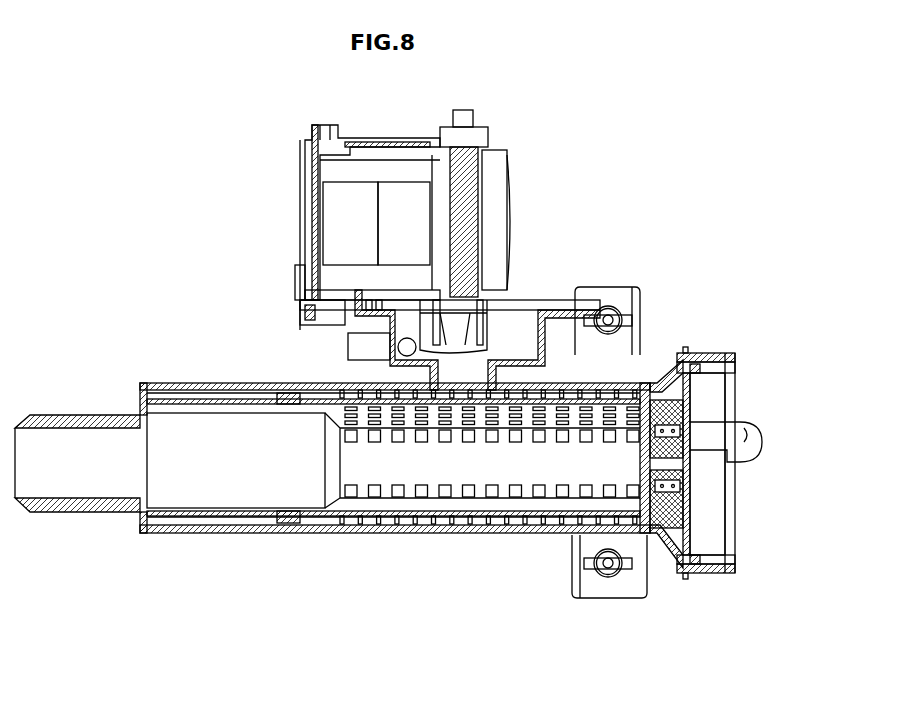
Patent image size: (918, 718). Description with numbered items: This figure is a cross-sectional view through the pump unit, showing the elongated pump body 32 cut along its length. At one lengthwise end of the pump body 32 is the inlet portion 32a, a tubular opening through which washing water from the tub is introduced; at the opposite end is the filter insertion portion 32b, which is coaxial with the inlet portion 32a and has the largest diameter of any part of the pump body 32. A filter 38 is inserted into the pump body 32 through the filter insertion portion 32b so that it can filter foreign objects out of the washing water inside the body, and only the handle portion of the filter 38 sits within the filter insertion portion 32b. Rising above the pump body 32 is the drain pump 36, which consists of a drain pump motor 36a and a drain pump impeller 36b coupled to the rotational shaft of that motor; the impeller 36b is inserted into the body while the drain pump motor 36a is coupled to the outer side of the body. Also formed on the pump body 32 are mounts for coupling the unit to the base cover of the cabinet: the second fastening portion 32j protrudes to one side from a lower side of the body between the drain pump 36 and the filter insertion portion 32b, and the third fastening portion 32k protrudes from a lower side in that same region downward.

The pump body 32 is at (398, 535).
The inlet portion 32a is at (70, 512).
The filter insertion portion 32b is at (708, 575).
The second fastening portion 32j is at (605, 592).
The third fastening portion 32k is at (643, 317).
The drain pump 36 is at (471, 250).
The drain pump motor 36a is at (513, 193).
The drain pump impeller 36b is at (505, 300).
The filter 38 is at (748, 430).